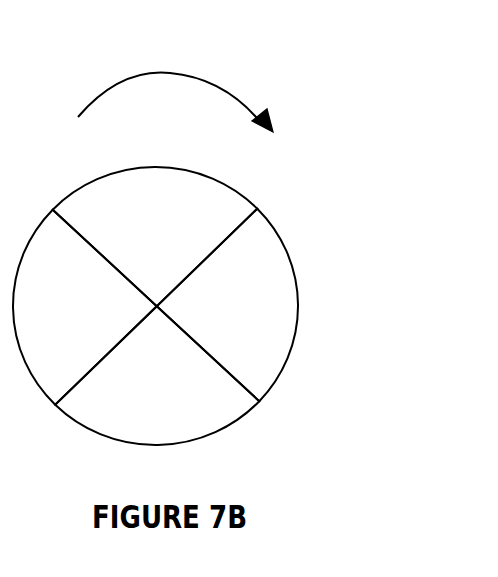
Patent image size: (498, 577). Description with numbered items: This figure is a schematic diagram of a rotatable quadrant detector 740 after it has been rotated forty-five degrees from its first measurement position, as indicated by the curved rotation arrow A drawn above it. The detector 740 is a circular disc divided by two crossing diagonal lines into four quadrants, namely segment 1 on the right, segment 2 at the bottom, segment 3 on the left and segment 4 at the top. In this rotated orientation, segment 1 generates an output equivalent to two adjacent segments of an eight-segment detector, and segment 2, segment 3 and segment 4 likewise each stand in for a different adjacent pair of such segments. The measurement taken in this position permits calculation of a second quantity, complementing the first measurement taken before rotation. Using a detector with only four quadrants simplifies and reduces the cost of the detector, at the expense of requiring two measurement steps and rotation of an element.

The quadrant detector 740 is at (207, 306).
The segment 1 is at (227, 305).
The segment 2 is at (157, 375).
The segment 3 is at (85, 307).
The segment 4 is at (155, 236).
The direction of rotation arrow A is at (175, 81).